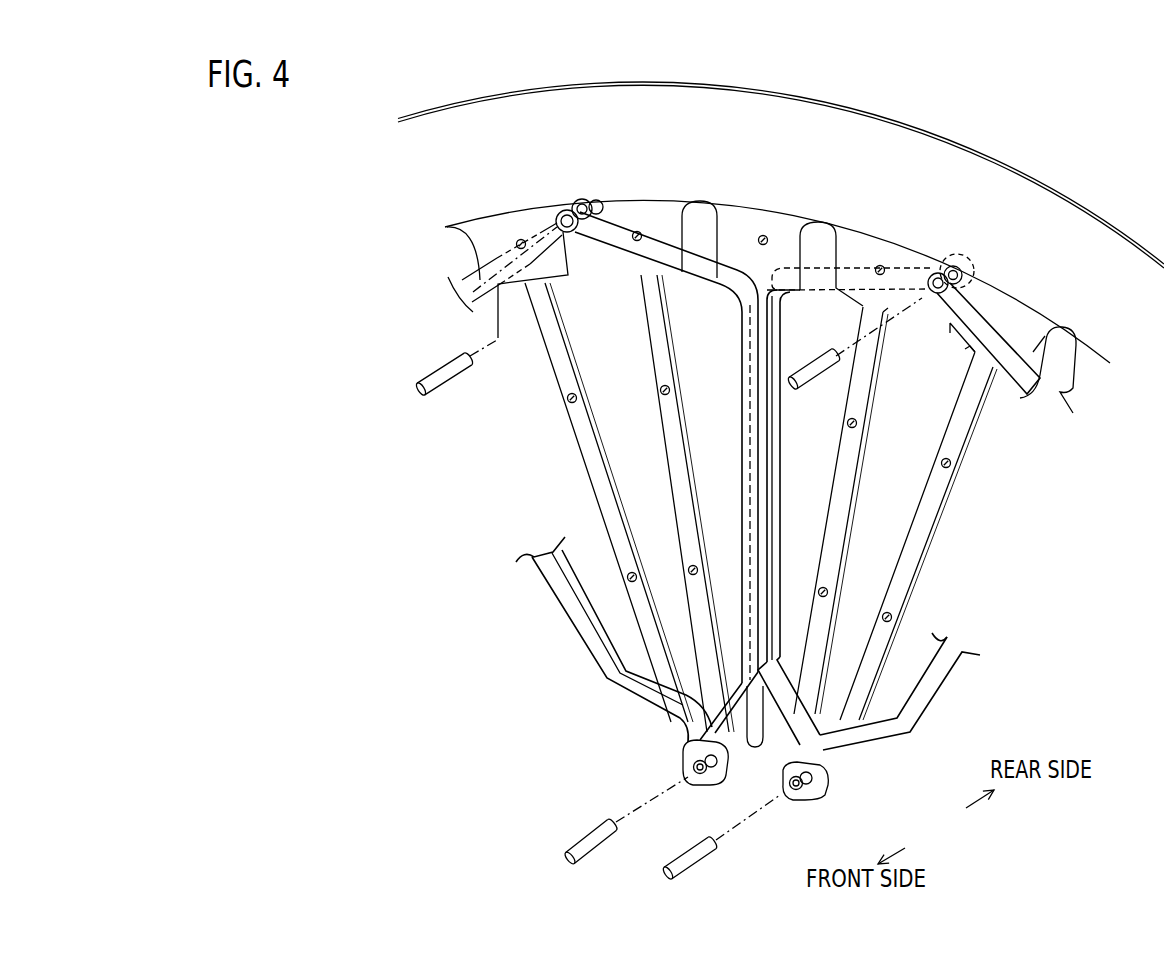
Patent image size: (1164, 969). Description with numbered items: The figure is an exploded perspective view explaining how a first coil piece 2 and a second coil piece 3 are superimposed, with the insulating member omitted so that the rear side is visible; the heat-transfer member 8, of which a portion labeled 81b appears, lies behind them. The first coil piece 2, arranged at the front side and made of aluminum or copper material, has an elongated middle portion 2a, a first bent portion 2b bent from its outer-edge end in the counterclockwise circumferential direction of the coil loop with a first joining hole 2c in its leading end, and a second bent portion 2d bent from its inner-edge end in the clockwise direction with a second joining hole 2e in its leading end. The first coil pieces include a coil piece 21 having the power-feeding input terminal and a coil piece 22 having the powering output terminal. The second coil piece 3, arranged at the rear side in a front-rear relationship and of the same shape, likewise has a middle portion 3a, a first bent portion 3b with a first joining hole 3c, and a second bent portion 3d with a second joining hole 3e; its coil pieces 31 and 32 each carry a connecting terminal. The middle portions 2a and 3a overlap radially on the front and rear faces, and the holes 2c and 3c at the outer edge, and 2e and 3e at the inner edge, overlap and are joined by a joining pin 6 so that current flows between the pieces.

The heat-transfer member 8 is at (1090, 206).
The bracket 81b is at (634, 575).
The first coil piece 2 is at (716, 497).
The coil piece 21 is at (724, 497).
The coil piece 22 is at (620, 707).
The middle portion 2a is at (740, 478).
The first bent portion 2b is at (700, 276).
The first joining hole 2c is at (556, 209).
The second bent portion 2d is at (795, 705).
The second joining hole 2e is at (795, 797).
The second coil piece 3 is at (819, 512).
The coil piece 31 is at (864, 748).
The coil piece 32 is at (812, 512).
The middle portion 3a is at (781, 492).
The first bent portion 3b is at (910, 262).
The first joining hole 3c is at (970, 266).
The second bent portion 3d is at (737, 660).
The second joining hole 3e is at (726, 776).
The joining pin 6 is at (444, 384).